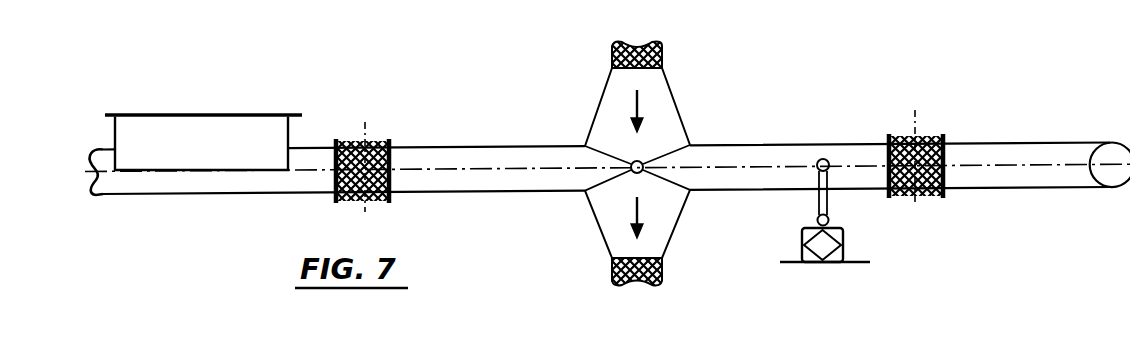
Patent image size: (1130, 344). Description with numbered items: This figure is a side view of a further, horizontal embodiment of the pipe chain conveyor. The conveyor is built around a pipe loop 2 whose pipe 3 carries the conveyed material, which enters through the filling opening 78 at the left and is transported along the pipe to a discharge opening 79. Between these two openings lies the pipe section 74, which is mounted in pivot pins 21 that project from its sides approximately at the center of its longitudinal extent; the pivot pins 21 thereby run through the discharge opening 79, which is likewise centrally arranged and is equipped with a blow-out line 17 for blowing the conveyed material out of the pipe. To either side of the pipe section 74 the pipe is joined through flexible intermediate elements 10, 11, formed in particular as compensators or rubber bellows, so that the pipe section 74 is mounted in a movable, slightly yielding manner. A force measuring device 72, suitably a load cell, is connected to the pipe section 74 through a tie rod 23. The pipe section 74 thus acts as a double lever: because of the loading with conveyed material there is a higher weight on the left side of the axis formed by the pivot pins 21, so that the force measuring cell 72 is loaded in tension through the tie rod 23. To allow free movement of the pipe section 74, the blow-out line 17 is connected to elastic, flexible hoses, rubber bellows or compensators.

The pipe loop 2 is at (978, 131).
The pipe 3 is at (103, 149).
The flexible intermediate element 10 is at (378, 145).
The flexible intermediate element 11 is at (905, 147).
The blow-out line 17 is at (607, 99).
The pivot pins 21 is at (642, 161).
The tie rod 23 is at (830, 204).
The force measuring device 72 is at (802, 237).
The pipe section 74 is at (475, 150).
The filling opening 78 is at (243, 130).
The discharge opening 79 is at (668, 203).